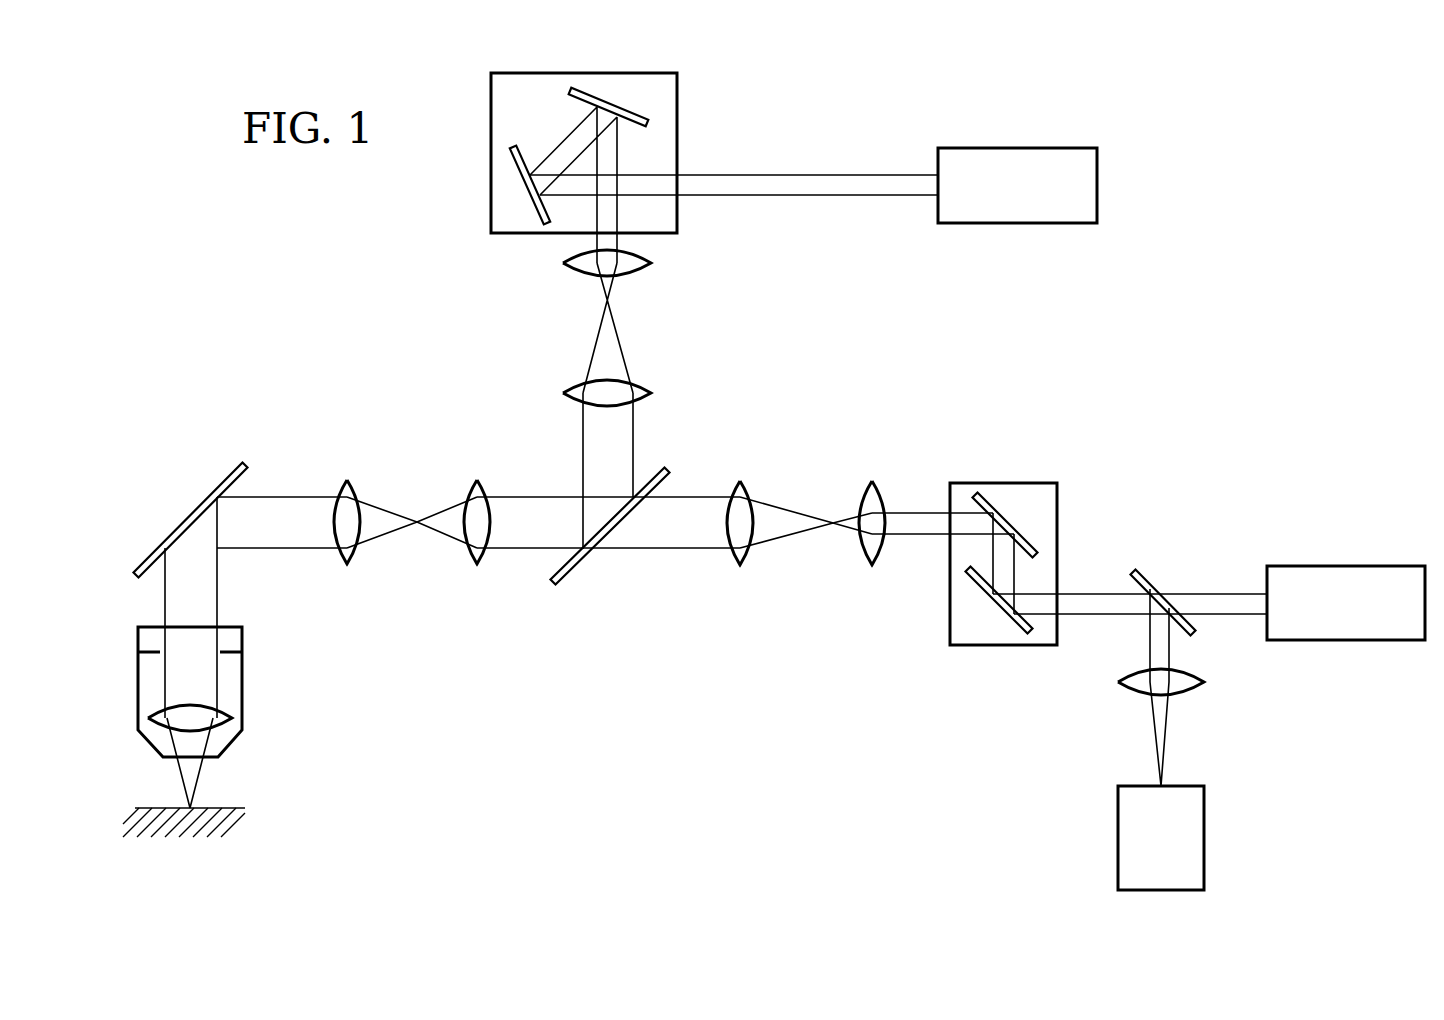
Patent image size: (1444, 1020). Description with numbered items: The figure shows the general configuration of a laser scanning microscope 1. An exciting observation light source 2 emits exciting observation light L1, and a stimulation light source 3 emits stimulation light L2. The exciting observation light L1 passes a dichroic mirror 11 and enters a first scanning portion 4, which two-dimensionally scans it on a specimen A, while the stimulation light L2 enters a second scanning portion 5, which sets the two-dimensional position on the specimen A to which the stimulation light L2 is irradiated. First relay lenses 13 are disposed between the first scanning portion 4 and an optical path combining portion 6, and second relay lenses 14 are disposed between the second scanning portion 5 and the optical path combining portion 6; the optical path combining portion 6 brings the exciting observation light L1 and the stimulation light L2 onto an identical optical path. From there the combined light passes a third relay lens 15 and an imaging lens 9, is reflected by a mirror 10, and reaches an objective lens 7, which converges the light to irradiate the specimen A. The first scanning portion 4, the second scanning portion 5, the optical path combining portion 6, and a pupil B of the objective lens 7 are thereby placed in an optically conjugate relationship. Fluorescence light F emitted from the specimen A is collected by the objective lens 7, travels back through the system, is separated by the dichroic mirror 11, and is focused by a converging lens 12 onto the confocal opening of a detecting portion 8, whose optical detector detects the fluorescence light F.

The laser scanning microscope 1 is at (1245, 246).
The exciting observation light source 2 is at (1332, 566).
The stimulation light source 3 is at (1017, 148).
The first scanning portion 4 is at (950, 626).
The second scanning portion 5 is at (677, 108).
The optical path combining portion 6 is at (575, 568).
The objective lens 7 is at (233, 717).
The detecting portion 8 is at (1205, 833).
The imaging lens 9 is at (343, 480).
The mirror 10 is at (230, 472).
The dichroic mirror 11 is at (1197, 633).
The converging lens 12 is at (1118, 682).
The first relay lenses 13 is at (887, 467).
The second relay lenses 14 is at (663, 247).
The third relay lens 15 is at (473, 480).
The specimen A is at (230, 808).
The pupil B is at (255, 652).
The fluorescence light F is at (1165, 747).
The exciting observation light L1 is at (1218, 592).
The stimulation light L2 is at (820, 175).